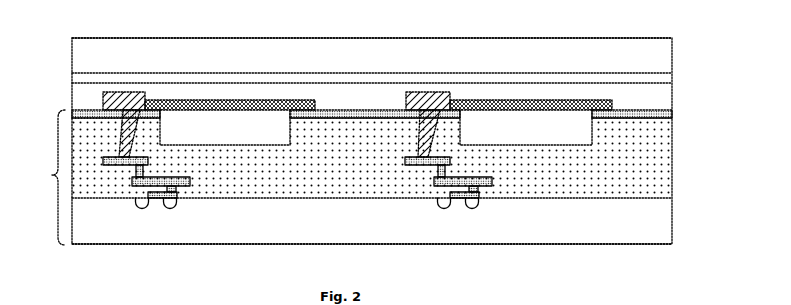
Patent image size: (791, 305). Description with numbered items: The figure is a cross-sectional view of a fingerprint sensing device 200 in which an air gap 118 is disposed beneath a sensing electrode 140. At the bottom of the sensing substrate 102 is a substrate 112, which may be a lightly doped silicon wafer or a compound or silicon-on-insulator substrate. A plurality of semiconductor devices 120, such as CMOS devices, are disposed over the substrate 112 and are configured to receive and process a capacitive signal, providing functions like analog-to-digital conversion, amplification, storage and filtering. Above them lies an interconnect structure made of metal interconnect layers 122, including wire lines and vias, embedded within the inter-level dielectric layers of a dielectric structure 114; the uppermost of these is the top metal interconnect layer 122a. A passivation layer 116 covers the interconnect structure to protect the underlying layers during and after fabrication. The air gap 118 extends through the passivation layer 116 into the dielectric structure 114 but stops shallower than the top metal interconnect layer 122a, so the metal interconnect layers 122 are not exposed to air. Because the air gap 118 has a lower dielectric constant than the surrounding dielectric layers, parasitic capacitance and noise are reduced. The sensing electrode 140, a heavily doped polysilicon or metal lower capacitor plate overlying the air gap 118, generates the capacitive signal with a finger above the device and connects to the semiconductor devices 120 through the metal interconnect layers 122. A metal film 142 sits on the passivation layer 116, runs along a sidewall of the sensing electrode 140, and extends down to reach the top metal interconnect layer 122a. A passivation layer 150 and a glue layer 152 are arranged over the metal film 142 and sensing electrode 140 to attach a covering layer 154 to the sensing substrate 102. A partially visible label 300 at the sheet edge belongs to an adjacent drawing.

The fingerprint sensing device 200 is at (125, 30).
The sensing substrate 102 is at (45, 183).
The substrate 112 is at (673, 225).
The dielectric structure 114 is at (673, 146).
The passivation layer 116 is at (673, 114).
The air gap 118 is at (238, 131).
The semiconductor devices 120 is at (190, 218).
The metal interconnect layers 122 is at (178, 164).
The top metal interconnect layer 122a is at (413, 157).
The sensing electrode 140 is at (590, 100).
The metal film 142 is at (412, 108).
The passivation layer 150 is at (673, 96).
The glue layer 152 is at (673, 78).
The covering layer 154 is at (673, 58).
The semiconductor device (next figure) 300 is at (120, 304).